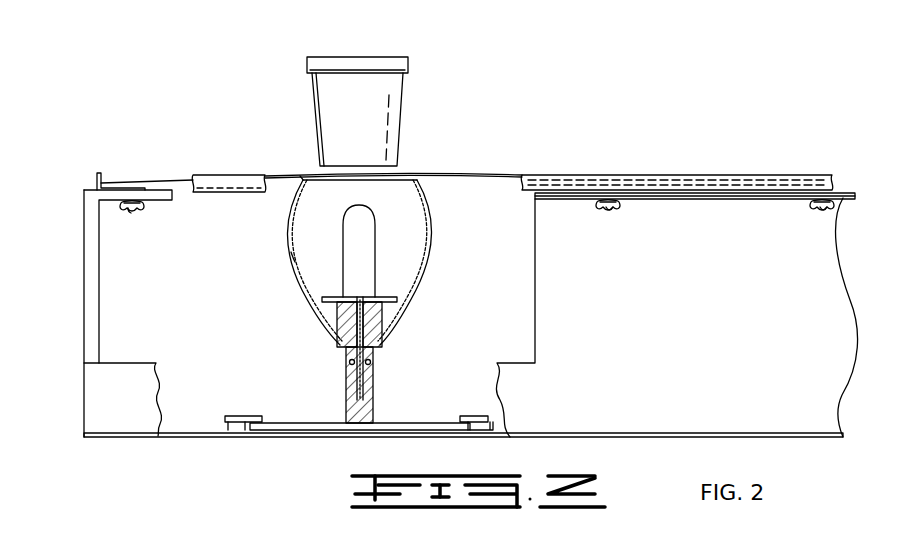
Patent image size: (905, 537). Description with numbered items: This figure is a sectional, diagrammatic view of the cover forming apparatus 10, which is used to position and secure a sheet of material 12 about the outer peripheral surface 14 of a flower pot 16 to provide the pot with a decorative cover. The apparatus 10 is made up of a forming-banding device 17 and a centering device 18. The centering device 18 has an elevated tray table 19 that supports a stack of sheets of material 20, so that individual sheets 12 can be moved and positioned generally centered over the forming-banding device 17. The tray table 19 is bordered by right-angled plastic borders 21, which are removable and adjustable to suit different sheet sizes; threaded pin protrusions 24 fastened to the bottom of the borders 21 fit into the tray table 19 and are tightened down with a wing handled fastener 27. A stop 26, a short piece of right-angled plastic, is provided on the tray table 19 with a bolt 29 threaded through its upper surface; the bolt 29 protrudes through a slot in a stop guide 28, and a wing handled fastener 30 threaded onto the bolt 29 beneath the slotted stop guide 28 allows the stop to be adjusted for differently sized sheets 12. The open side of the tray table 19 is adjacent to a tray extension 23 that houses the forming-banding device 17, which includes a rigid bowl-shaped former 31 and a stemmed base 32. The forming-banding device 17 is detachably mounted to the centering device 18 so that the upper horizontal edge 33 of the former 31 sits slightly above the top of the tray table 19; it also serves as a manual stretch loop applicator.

The cover forming apparatus 10 is at (700, 175).
The sheet of material 12 is at (500, 175).
The outer peripheral surface 14 is at (315, 97).
The flower pot 16 is at (375, 57).
The forming-banding device 17 is at (294, 265).
The centering device 18 is at (600, 175).
The tray table 19 is at (848, 193).
The stack of sheets of material 20 is at (672, 186).
The borders 21 is at (745, 175).
The tray extension 23 is at (128, 410).
The pin protrusions 24 is at (605, 210).
The stop 26 is at (97, 178).
The wing handled fastener 27 is at (618, 210).
The stop guide 28 is at (165, 190).
The bolt 29 is at (133, 212).
The wing handled fastener 30 is at (142, 208).
The former 31 is at (435, 258).
The stemmed base 32 is at (415, 423).
The upper horizontal edge 33 is at (420, 178).